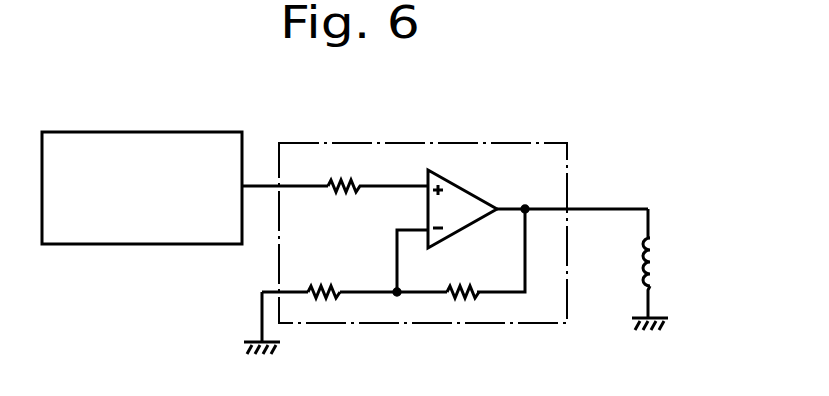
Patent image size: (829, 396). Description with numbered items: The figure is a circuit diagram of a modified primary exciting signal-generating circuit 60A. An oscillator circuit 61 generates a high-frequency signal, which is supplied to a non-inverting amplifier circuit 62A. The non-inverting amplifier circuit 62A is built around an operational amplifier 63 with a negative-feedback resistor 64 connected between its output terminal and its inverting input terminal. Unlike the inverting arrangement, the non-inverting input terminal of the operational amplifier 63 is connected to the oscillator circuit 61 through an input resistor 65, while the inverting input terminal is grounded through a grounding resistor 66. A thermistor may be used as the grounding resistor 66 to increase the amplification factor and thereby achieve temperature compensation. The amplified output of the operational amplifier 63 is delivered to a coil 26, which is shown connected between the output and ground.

The oscillator circuit 61 is at (160, 132).
The modified primary exciting signal-generating circuit 60A is at (575, 138).
The non-inverting amplifier circuit 62A is at (500, 143).
The operational amplifier 63 is at (476, 222).
The negative-feedback resistor 64 is at (455, 300).
The input resistor 65 is at (341, 198).
The grounding resistor 66 is at (325, 300).
The coil 26 is at (657, 266).